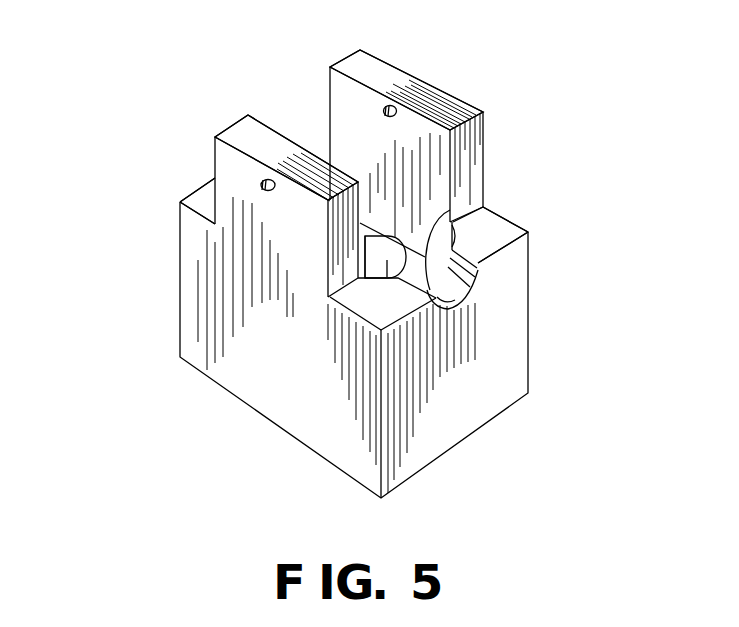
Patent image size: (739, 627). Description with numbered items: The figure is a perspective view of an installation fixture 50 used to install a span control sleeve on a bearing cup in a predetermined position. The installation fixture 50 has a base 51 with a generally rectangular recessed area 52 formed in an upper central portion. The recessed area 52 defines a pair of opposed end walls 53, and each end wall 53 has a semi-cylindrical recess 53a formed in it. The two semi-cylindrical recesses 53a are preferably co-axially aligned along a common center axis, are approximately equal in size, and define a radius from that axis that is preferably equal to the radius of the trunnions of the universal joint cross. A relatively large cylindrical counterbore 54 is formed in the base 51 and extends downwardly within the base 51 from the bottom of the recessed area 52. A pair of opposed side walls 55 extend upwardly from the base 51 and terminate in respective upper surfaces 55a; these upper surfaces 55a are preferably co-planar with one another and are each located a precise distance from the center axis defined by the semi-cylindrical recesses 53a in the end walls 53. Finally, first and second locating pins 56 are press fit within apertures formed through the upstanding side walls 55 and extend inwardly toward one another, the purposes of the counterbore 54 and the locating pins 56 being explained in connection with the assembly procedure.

The installation fixture 50 is at (197, 53).
The base 51 is at (483, 403).
The recessed area 52 is at (453, 211).
The end walls 53 is at (200, 200).
The semi-cylindrical recesses 53a is at (452, 285).
The cylindrical counterbore 54 is at (382, 257).
The side walls 55 is at (347, 90).
The upper surfaces 55a is at (237, 132).
The locating pins 56 is at (261, 184).